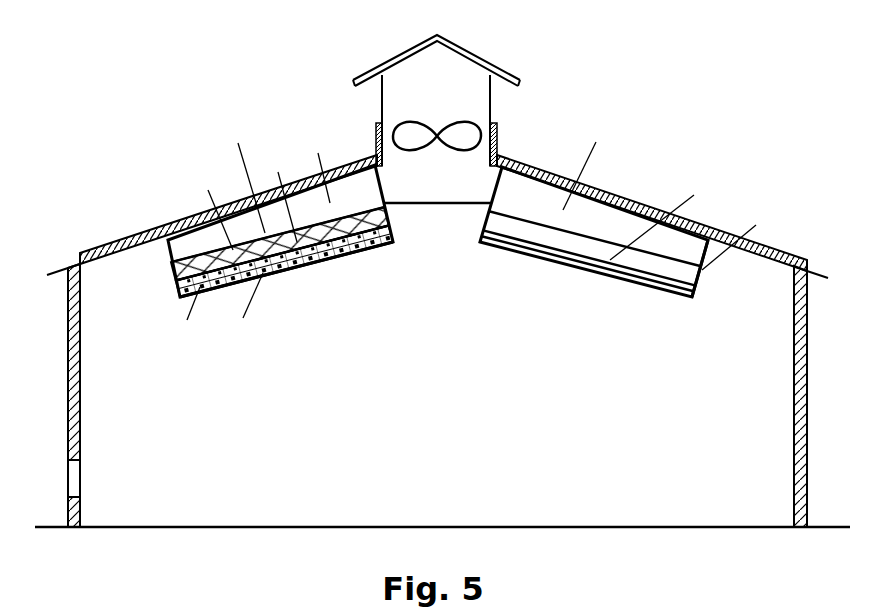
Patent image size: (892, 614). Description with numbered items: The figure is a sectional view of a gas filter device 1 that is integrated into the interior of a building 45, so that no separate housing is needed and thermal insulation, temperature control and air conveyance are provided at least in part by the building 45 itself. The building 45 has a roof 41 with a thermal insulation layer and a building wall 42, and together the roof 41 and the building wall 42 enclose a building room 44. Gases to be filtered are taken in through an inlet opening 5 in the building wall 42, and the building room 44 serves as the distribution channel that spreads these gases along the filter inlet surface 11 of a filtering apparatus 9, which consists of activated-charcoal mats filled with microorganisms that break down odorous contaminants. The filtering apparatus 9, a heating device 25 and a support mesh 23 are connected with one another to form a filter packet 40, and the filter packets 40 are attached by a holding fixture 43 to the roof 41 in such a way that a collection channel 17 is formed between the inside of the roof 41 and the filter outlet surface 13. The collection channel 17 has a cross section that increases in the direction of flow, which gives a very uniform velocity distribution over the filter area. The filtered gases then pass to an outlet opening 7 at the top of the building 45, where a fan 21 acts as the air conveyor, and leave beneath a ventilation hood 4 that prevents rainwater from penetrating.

The gas filter device 1 is at (260, 227).
The ventilation hood 4 is at (473, 58).
The inlet opening 5 is at (73, 482).
The outlet opening 7 is at (382, 112).
The filtering apparatus 9 is at (268, 199).
The filter inlet surface 11 is at (294, 297).
The filter outlet surface 13 is at (261, 170).
The collection channel 17 is at (270, 203).
The fan 21 is at (477, 130).
The support mesh 23 is at (332, 317).
The heating device 25 is at (268, 199).
The filter packet 40 is at (606, 200).
The roof 41 is at (618, 198).
The building wall 42 is at (808, 400).
The holding fixture 43 is at (742, 246).
The building room 44 is at (638, 212).
The building 45 is at (85, 258).